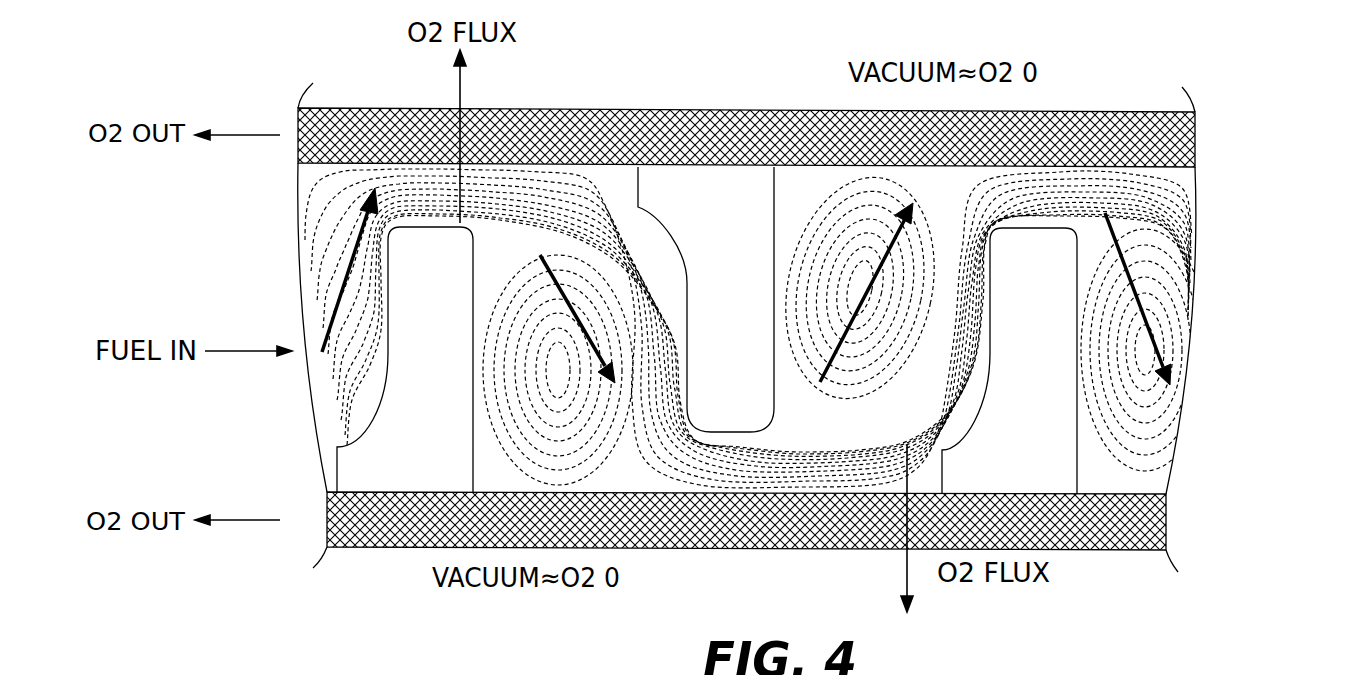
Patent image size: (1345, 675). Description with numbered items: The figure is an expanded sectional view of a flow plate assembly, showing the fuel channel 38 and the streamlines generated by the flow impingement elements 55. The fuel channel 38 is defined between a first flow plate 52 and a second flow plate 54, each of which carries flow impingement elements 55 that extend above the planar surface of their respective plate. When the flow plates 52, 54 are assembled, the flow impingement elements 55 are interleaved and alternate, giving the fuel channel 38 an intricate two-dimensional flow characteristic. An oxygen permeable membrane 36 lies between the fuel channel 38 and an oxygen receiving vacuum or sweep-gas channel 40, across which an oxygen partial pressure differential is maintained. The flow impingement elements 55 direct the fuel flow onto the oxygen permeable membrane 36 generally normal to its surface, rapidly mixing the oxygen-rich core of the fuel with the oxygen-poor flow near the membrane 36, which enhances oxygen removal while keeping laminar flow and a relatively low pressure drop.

The oxygen permeable membrane 36 is at (789, 328).
The fuel channel 38 is at (1288, 346).
The oxygen receiving vacuum or sweep-gas channel 40 is at (1243, 69).
The first flow plate 52 is at (710, 165).
The second flow plate 54 is at (1060, 500).
The flow impingement element 55 is at (445, 432).